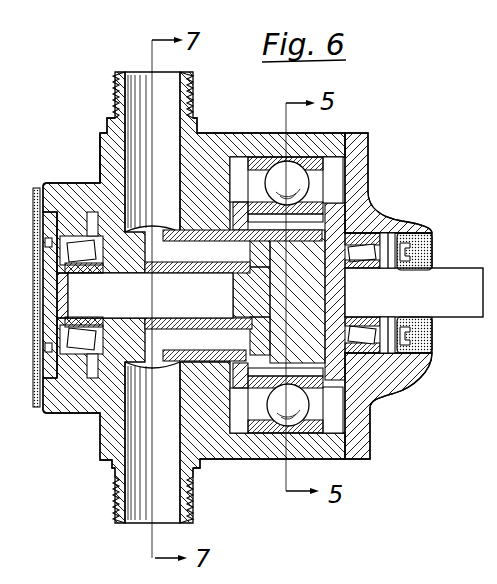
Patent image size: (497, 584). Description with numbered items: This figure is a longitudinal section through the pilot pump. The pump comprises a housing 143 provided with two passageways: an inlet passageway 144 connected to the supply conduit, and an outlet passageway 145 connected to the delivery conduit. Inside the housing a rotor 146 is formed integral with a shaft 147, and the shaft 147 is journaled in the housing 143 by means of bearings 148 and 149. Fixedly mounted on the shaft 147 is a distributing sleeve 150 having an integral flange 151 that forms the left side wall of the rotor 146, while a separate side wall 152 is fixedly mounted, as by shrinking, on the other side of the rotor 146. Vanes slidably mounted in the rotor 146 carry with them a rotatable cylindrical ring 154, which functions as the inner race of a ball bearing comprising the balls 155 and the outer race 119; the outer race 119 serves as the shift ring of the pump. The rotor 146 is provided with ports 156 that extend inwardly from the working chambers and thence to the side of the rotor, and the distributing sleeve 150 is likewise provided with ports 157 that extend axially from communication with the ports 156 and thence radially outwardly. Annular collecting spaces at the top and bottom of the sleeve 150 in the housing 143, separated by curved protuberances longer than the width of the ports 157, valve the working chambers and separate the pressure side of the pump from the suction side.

The outer race 119 is at (322, 158).
The housing 143 is at (250, 133).
The inlet passageway 144 is at (143, 74).
The outlet passageway 145 is at (146, 523).
The rotor 146 is at (318, 264).
The shaft 147 is at (440, 280).
The bearing 148 is at (365, 300).
The bearing 149 is at (87, 307).
The distributing sleeve 150 is at (128, 258).
The flange 151 is at (250, 356).
The side wall 152 is at (362, 200).
The rotatable cylindrical ring 154 is at (323, 406).
The balls 155 is at (323, 410).
The ports 156 is at (264, 250).
The ports 157 is at (208, 258).